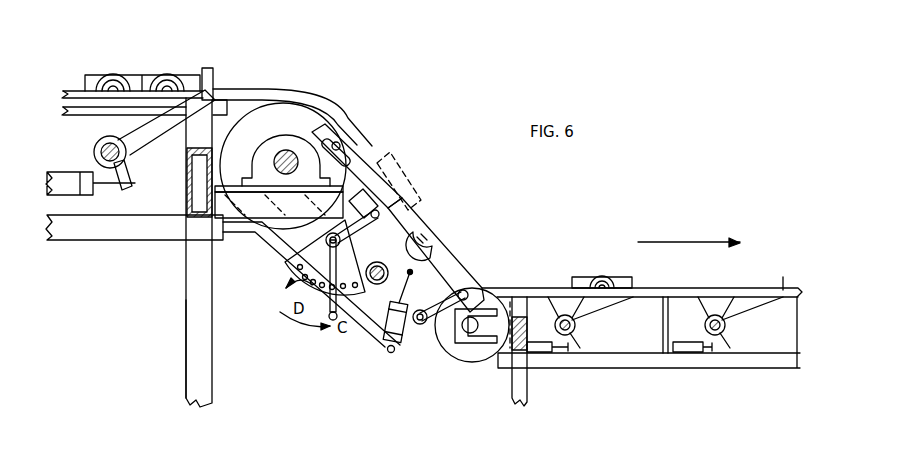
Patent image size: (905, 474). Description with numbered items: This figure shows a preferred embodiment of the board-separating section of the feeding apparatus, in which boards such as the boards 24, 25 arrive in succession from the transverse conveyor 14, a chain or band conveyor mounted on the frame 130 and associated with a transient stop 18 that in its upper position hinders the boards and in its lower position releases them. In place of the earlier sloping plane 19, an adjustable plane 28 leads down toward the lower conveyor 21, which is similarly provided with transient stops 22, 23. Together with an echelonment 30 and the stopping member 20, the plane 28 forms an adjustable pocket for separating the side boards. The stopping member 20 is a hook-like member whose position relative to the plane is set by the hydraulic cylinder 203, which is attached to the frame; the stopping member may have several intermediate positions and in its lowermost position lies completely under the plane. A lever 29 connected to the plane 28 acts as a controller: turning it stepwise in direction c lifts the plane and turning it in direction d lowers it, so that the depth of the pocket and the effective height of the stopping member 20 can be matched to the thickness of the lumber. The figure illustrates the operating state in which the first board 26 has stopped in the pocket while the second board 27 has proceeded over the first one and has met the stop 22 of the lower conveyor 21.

The transverse conveyor 14 is at (242, 90).
The transient stop 18 is at (208, 72).
The sloping plane 19 is at (422, 165).
The stopping member 20 is at (430, 222).
The lower conveyor 21 is at (573, 362).
The transient stop 22 is at (600, 308).
The transient stop 23 is at (745, 317).
The board 24 is at (108, 75).
The board 25 is at (166, 77).
The first board 26 is at (372, 248).
The second board 27 is at (590, 280).
The adjustable plane 28 is at (428, 262).
The lever 29 is at (277, 268).
The echelonment 30 is at (362, 170).
The frame 130 is at (180, 378).
The hydraulic cylinder 203 is at (382, 330).